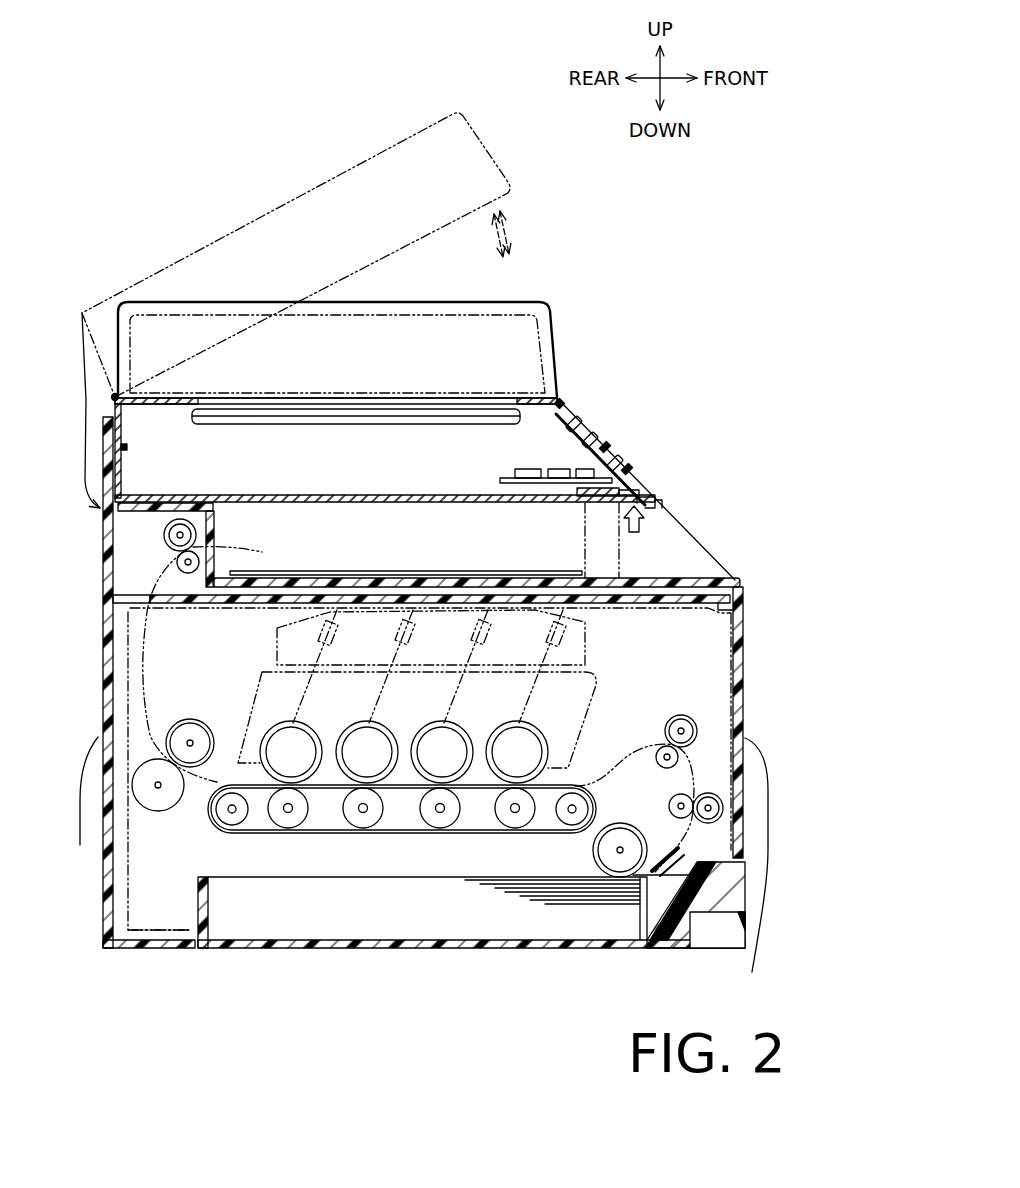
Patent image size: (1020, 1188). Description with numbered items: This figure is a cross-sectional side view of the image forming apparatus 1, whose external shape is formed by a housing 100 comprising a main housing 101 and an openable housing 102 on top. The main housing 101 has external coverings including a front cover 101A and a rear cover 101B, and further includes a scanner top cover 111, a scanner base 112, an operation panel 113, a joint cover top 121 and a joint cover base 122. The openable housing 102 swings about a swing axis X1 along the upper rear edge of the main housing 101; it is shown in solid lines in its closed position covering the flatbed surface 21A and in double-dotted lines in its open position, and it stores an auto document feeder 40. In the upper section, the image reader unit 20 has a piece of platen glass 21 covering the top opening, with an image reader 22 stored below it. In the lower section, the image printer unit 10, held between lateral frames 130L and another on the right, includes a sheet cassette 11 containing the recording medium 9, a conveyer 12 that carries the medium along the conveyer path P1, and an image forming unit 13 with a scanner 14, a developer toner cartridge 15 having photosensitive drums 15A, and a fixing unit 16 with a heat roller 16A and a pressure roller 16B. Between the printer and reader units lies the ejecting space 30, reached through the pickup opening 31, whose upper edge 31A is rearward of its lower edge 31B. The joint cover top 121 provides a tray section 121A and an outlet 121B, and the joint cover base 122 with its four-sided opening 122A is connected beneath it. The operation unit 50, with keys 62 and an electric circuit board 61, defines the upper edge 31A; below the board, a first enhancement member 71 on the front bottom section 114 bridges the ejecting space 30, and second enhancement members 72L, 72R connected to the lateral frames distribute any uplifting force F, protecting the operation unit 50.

The image forming apparatus 1 is at (642, 311).
The recording medium 9 is at (375, 572).
The image printer unit 10 is at (708, 708).
The sheet cassette 11 is at (509, 949).
The conveyer 12 is at (601, 804).
The image forming unit 13 is at (633, 684).
The scanner 14 is at (275, 645).
The developer toner cartridge 15 is at (258, 690).
The photosensitive drum 15A is at (296, 726).
The fixing unit 16 is at (208, 722).
The heat roller 16A is at (184, 737).
The pressure roller 16B is at (158, 802).
The image reader unit 20 is at (541, 425).
The platen glass 21 is at (362, 395).
The flatbed surface 21A is at (433, 396).
The image reader 22 is at (345, 425).
The ejecting space 30 is at (280, 529).
The pickup opening 31 is at (730, 576).
The upper edge 31A is at (646, 506).
The lower edge 31B is at (741, 580).
The auto document feeder 40 is at (521, 333).
The operation unit 50 is at (582, 410).
The electric circuit board 61 is at (508, 478).
The keys 62 is at (609, 440).
The first enhancement member 71 is at (590, 493).
The second enhancement member 72L is at (621, 612).
The second enhancement member 72R is at (430, 610).
The housing 100 is at (158, 223).
The main housing 101 is at (115, 397).
The front cover 101A is at (756, 867).
The rear cover 101B is at (80, 845).
The openable housing 102 is at (309, 195).
The scanner top cover 111 is at (146, 406).
The scanner base 112 is at (126, 484).
The operation panel 113 is at (633, 470).
The front bottom section 114 is at (651, 513).
The joint cover top 121 is at (483, 572).
The tray section 121A is at (532, 572).
The outlet 121B is at (232, 551).
The joint cover base 122 is at (432, 593).
The four-sided opening 122A is at (206, 605).
The lateral frame 130L is at (120, 913).
The swing axis X1 is at (121, 394).
The conveyer path P1 is at (604, 763).
The uplifting force F is at (634, 531).